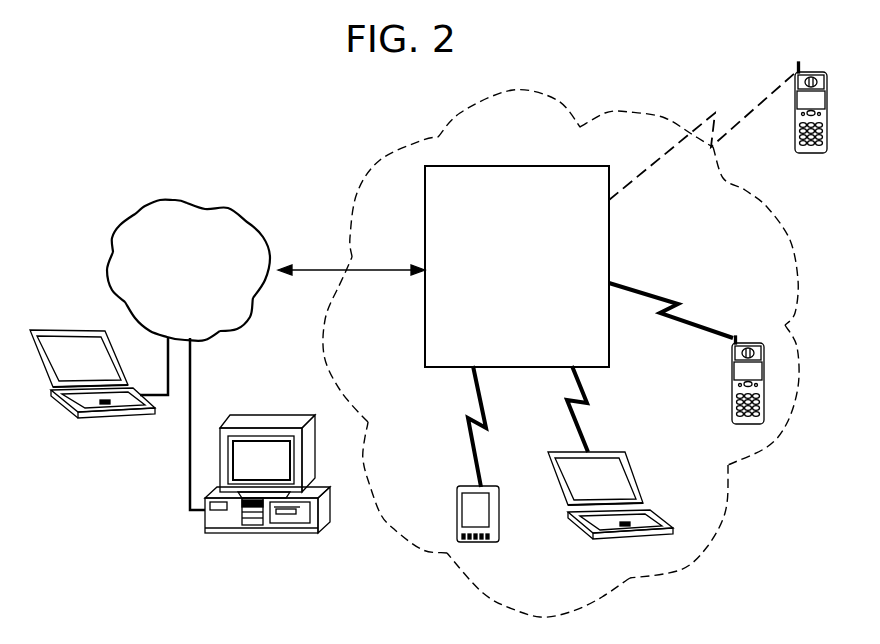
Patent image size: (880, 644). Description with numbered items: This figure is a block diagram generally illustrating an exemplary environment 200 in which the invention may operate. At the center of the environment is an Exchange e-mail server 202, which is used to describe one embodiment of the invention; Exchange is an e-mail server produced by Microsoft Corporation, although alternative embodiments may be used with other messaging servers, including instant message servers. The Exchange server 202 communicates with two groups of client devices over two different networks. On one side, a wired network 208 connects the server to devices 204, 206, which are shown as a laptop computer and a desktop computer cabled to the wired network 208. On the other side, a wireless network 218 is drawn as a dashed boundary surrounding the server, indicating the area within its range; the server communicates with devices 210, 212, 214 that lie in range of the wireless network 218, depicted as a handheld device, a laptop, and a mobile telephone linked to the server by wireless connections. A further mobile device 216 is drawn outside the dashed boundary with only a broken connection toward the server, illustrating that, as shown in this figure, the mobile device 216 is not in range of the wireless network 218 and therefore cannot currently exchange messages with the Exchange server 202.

The exemplary environment 200 is at (215, 70).
The Exchange e-mail server 202 is at (515, 166).
The device 204 is at (115, 417).
The device 206 is at (272, 537).
The wired network 208 is at (189, 201).
The device 210 is at (500, 522).
The device 212 is at (608, 465).
The device 214 is at (748, 375).
The mobile device 216 is at (820, 154).
The wireless network 218 is at (558, 98).